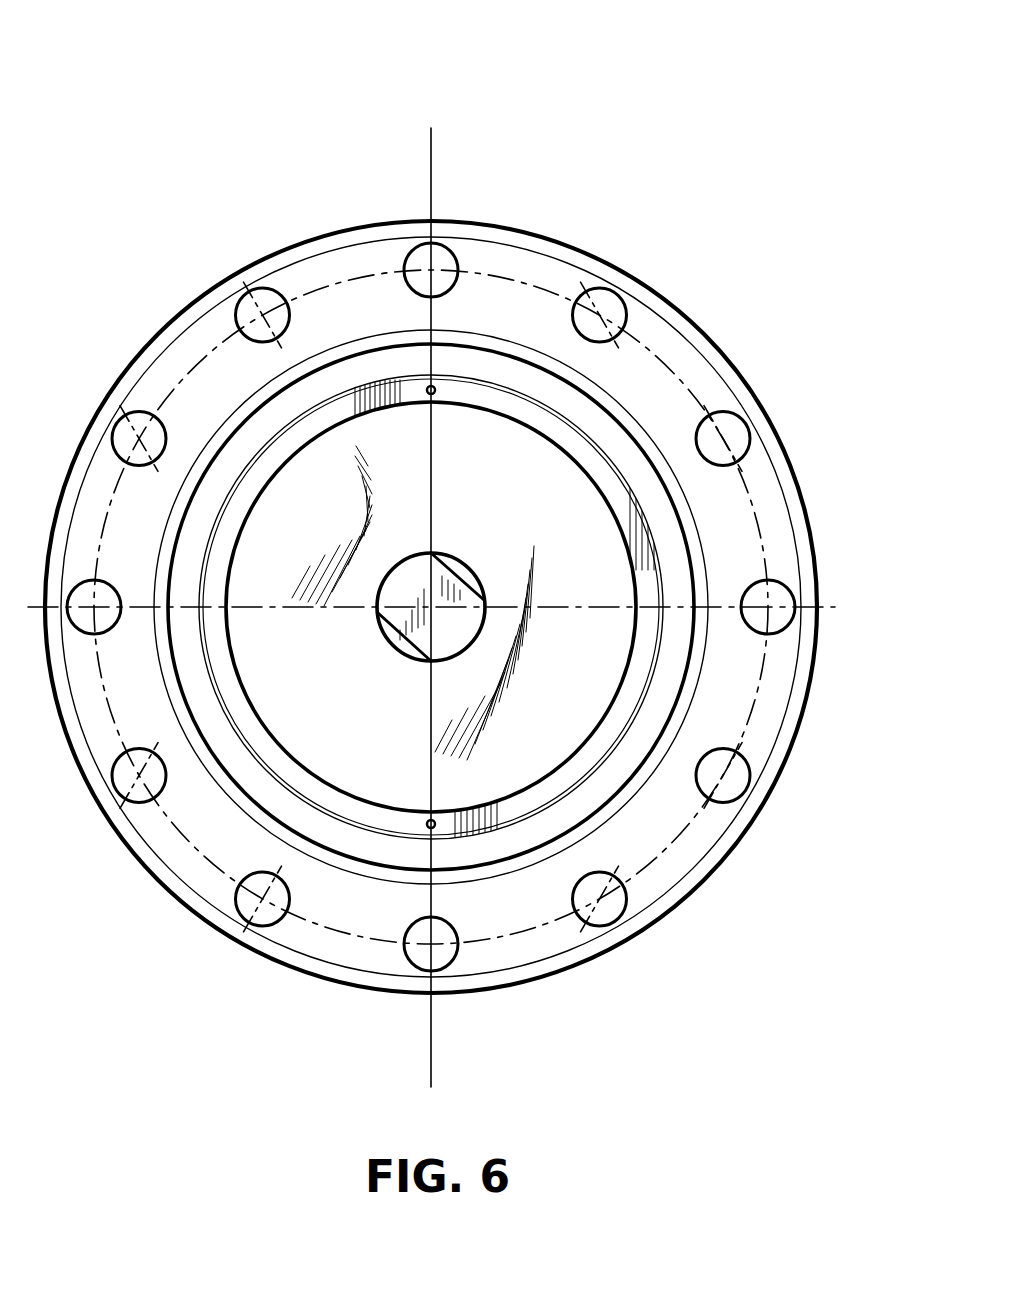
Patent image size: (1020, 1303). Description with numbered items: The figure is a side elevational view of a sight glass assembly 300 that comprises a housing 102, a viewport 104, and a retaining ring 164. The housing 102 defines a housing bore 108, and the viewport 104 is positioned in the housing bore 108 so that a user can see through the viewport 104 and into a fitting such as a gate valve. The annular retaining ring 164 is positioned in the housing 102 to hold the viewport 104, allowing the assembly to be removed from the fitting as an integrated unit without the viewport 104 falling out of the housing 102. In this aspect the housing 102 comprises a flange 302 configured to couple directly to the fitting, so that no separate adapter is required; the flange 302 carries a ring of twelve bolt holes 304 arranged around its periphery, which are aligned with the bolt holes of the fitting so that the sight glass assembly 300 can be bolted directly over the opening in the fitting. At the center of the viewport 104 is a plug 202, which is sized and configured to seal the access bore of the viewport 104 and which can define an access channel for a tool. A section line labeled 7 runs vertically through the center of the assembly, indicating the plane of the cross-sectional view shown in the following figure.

The sight glass assembly 300 is at (297, 102).
The housing 102 is at (678, 365).
The flange 302 is at (173, 352).
The bolt holes 304 is at (740, 773).
The retaining ring 164 is at (505, 403).
The viewport 104 is at (352, 762).
The housing bore 108 is at (551, 533).
The plug 202 is at (407, 592).
The section line 7- 7 is at (431, 128).